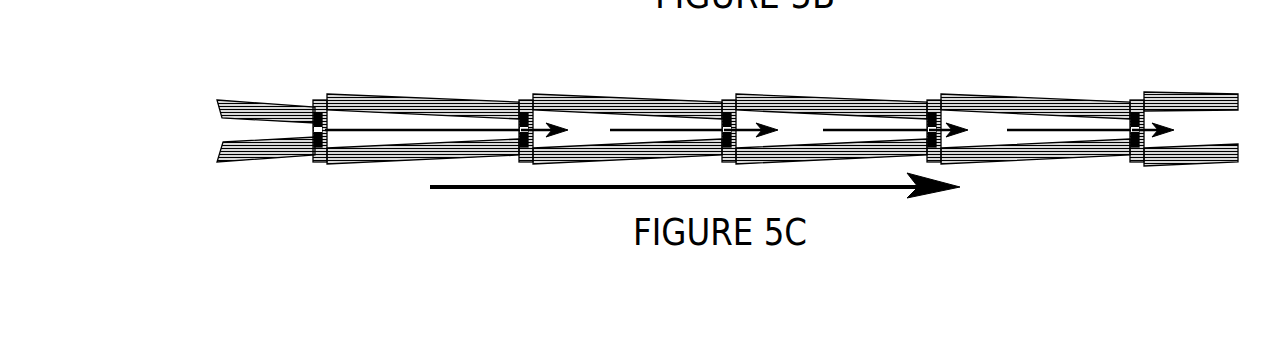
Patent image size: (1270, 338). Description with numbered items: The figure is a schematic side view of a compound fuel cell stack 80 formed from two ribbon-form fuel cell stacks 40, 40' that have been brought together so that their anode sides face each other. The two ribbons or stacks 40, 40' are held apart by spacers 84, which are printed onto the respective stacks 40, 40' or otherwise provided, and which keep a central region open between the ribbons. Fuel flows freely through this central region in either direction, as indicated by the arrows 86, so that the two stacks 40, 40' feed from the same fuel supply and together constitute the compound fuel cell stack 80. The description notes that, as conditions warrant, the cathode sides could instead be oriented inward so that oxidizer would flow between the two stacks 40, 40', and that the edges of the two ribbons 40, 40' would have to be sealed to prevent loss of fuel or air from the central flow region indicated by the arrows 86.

The compound fuel cell stack 80 is at (478, 58).
The spacers 84 is at (930, 123).
The fuel cell stack 40 is at (1035, 75).
The fuel cell stack 40' is at (1035, 179).
The arrows 86 is at (1045, 125).